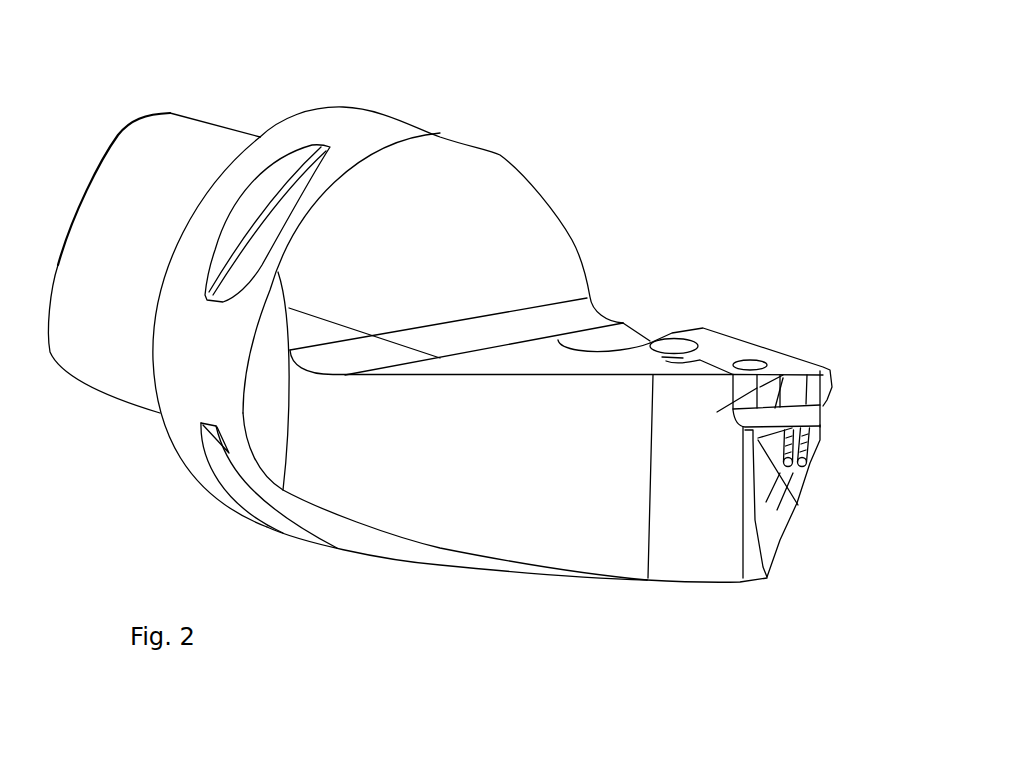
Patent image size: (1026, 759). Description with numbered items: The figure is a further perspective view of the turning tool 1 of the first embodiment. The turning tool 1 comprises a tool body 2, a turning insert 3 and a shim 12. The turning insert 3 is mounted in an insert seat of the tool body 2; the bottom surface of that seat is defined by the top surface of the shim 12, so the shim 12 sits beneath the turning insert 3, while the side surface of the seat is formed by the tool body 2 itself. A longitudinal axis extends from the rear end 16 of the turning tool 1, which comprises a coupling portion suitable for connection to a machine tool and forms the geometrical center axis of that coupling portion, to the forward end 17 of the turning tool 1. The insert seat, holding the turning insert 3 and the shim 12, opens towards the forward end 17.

The turning tool 1 is at (626, 187).
The tool body 2 is at (202, 398).
The turning insert 3 is at (777, 367).
The shim 12 is at (803, 414).
The rear end 16 is at (116, 116).
The forward end 17 is at (832, 487).